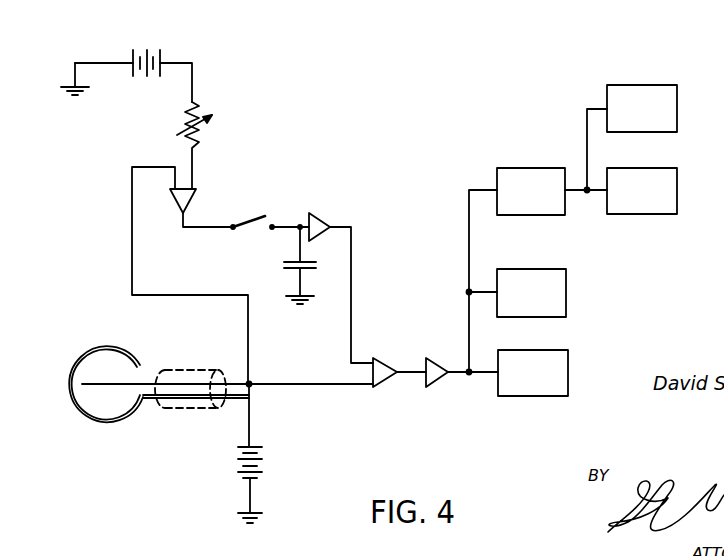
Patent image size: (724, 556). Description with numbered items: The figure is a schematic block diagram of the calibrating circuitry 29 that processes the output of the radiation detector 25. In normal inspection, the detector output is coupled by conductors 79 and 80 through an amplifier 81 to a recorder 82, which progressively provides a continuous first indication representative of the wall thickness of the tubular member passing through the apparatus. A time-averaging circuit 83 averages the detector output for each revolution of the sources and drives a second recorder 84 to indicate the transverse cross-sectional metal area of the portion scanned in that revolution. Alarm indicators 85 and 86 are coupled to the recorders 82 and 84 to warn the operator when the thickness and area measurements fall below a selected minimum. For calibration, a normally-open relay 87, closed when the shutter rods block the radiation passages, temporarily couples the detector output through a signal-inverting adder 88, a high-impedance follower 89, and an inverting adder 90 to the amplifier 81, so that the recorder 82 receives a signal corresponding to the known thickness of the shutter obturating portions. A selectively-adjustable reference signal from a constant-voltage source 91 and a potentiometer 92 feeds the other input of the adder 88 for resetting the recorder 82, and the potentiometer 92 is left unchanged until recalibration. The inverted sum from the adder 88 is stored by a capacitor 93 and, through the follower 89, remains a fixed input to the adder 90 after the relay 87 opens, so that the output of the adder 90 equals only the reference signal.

The radiation detector 25 is at (110, 427).
The calibrating circuitry 29 is at (322, 129).
The conductor 79 is at (237, 383).
The conductor 80 is at (251, 429).
The amplifier 81 is at (438, 387).
The recorder 82 is at (533, 373).
The time-averaging circuit 83 is at (538, 270).
The recorder 84 is at (631, 191).
The alarm indicator 85 is at (517, 293).
The alarm indicator 86 is at (632, 137).
The normally-open relay 87 is at (255, 213).
The inverting adder 88 is at (193, 200).
The follower 89 is at (322, 213).
The inverting adder 90 is at (390, 358).
The constant-voltage source 91 is at (163, 52).
The potentiometer 92 is at (203, 103).
The capacitor 93 is at (287, 258).